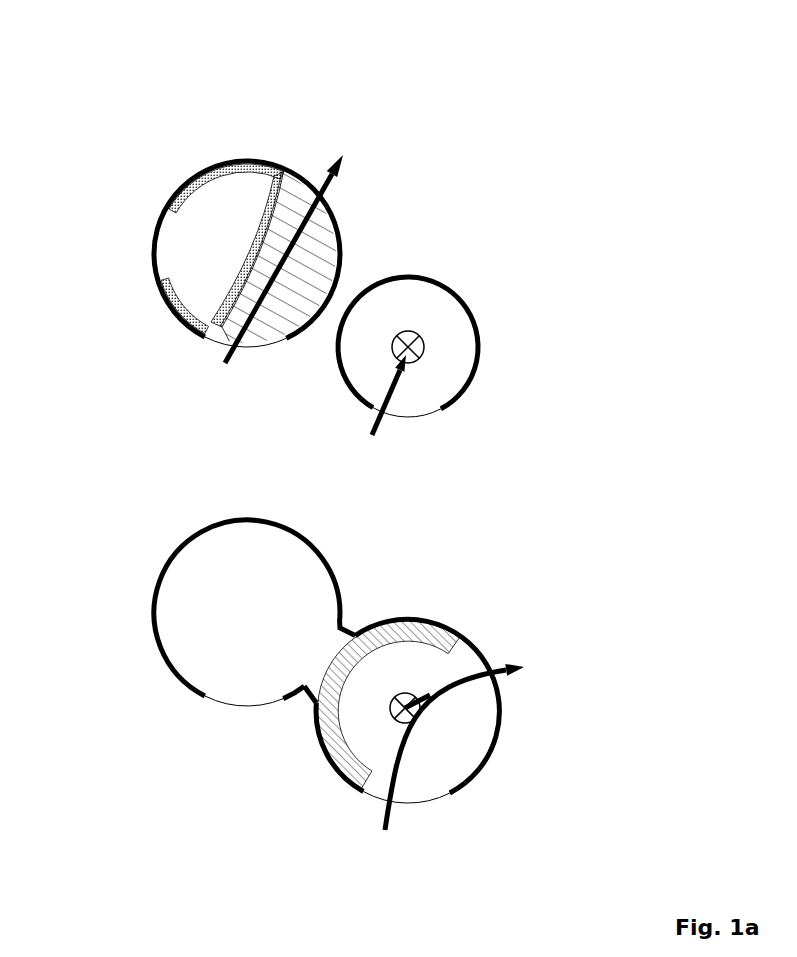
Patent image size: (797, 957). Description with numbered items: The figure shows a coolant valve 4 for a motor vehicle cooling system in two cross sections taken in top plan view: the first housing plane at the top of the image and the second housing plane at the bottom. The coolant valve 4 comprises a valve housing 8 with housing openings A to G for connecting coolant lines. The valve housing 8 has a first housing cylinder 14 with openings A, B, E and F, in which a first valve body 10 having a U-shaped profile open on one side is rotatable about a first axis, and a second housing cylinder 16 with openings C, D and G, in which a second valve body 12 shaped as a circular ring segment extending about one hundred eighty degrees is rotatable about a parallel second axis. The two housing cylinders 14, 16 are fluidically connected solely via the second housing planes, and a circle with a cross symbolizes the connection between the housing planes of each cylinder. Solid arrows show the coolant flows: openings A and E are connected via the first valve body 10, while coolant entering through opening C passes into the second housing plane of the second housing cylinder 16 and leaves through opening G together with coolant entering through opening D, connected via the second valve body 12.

The coolant valve 4 is at (634, 56).
The valve housing 8 is at (580, 155).
The first valve body 10 is at (167, 313).
The second valve body 12 is at (467, 635).
The first housing cylinder 14 is at (157, 227).
The second housing cylinder 16 is at (457, 297).